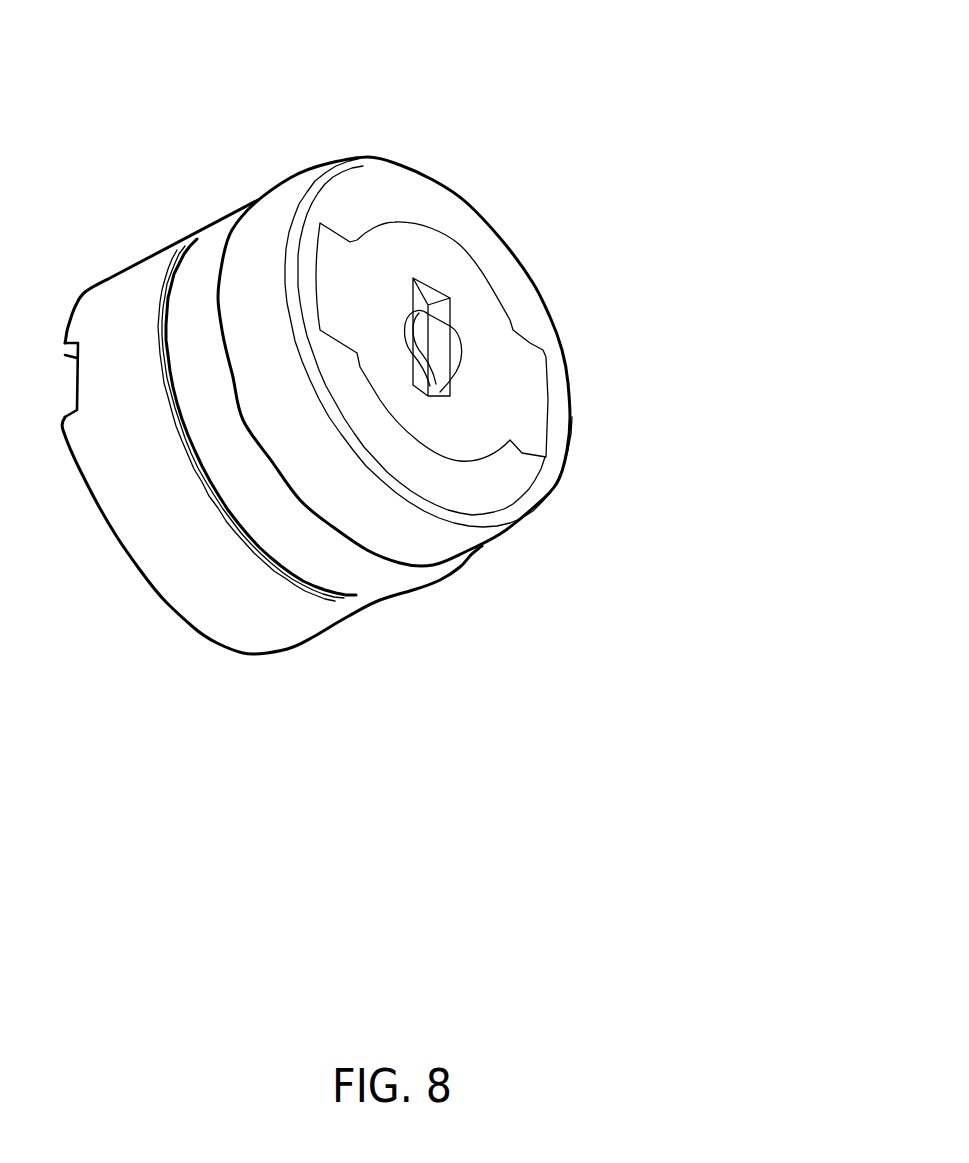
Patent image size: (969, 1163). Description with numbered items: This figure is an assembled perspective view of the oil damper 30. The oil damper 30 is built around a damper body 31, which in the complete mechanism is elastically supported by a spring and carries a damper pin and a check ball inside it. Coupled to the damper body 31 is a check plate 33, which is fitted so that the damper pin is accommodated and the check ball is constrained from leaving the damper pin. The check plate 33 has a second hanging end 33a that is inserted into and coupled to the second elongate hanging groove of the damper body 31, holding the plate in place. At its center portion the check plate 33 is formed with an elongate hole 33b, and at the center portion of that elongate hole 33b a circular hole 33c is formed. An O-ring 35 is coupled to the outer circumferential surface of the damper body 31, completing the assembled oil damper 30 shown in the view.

The oil damper 30 is at (528, 157).
The damper body 31 is at (227, 592).
The check plate 33 is at (467, 427).
The second hanging end 33a is at (535, 400).
The elongate hole 33b is at (428, 300).
The circular hole 33c is at (450, 352).
The O-ring 35 is at (365, 573).